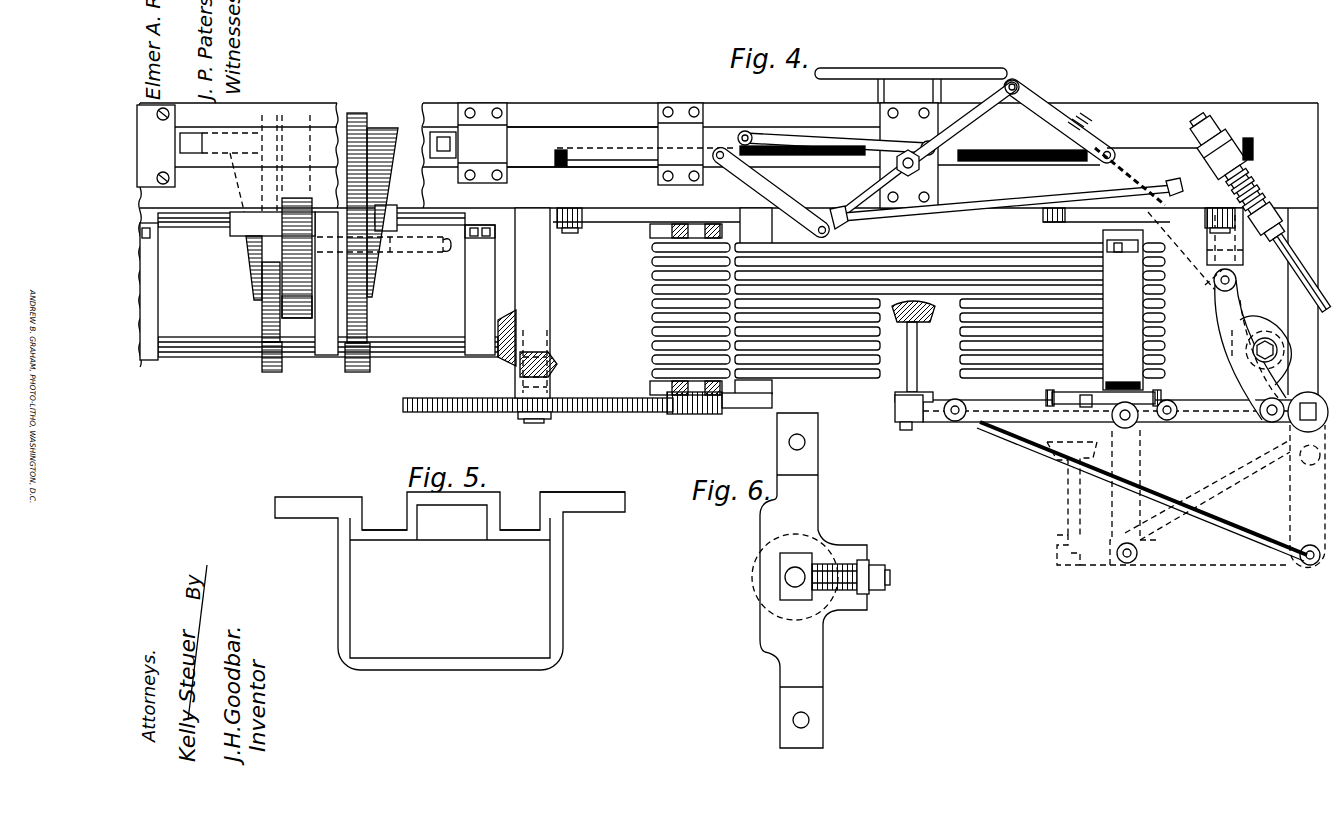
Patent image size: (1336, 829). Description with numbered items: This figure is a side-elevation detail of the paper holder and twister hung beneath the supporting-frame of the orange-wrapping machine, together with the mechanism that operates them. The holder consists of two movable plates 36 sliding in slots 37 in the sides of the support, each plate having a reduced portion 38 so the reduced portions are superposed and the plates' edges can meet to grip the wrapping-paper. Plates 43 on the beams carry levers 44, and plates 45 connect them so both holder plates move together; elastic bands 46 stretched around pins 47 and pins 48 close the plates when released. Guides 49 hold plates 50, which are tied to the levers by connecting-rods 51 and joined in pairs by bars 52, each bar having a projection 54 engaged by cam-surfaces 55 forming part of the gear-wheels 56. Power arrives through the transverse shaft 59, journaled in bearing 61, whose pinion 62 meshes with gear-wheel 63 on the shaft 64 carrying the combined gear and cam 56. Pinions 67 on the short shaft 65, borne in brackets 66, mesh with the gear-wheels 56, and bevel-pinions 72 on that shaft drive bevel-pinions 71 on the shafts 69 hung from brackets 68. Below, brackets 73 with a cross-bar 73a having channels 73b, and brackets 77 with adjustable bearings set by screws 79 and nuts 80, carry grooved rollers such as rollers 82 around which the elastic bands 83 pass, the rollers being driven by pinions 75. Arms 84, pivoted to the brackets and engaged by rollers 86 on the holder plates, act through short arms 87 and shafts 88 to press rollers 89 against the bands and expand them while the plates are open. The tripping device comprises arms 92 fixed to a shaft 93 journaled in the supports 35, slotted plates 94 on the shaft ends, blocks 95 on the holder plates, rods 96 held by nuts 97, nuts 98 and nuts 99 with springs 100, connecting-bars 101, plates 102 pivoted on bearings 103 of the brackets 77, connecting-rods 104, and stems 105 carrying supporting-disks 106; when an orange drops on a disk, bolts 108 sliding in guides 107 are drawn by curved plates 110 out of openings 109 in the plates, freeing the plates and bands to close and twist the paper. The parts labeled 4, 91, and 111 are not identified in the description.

In FIG. 4, the frame 4 is at (776, 106).
In FIG. 4, the supports 35 is at (1290, 312).
In FIG. 4, the movable plates 36 is at (1126, 150).
In FIG. 4, the slots 37 is at (990, 163).
In FIG. 4, the reduced portion 38 is at (1018, 140).
In FIG. 4, the plates 43 is at (918, 87).
In FIG. 4, the levers 44 is at (985, 100).
In FIG. 4, the plates 45 is at (1044, 106).
In FIG. 4, the elastic bands 46 is at (1046, 195).
In FIG. 4, the pins 47 is at (1180, 183).
In FIG. 4, the pins 48 is at (837, 208).
In FIG. 4, the guides 49 is at (692, 100).
In FIG. 4, the plates 50 is at (205, 155).
In FIG. 4, the connecting-rods 51 is at (843, 144).
In FIG. 4, the bars 52 is at (212, 127).
In FIG. 4, the projection 54 is at (432, 137).
In FIG. 4, the cam-surfaces 55 is at (388, 192).
In FIG. 4, the gear-wheels 56 is at (363, 129).
In FIG. 4, the transverse shaft 59 is at (594, 137).
In FIG. 4, the bearing 61 is at (250, 212).
In FIG. 4, the pinion 62 is at (296, 198).
In FIG. 4, the gear-wheel 63 is at (300, 318).
In FIG. 4, the shaft 64 is at (384, 243).
In FIG. 4, the short transverse shaft 65 is at (430, 336).
In FIG. 4, the brackets 66 is at (158, 320).
In FIG. 4, the pinions 67 is at (271, 372).
In FIG. 4, the brackets 68 is at (551, 332).
In FIG. 4, the short shafts 69 is at (533, 422).
In FIG. 4, the bevel-pinions 71 is at (557, 365).
In FIG. 4, the bevel-pinions 72 is at (510, 326).
In FIG. 4, the brackets 73 is at (650, 387).
In FIG. 5, the brackets 73 is at (565, 575).
In FIG. 4, the cross-bar 73a is at (652, 233).
In FIG. 5, the cross-bar 73a is at (560, 492).
In FIG. 5, the channels 73b is at (380, 517).
In FIG. 4, the pinions 75 is at (700, 415).
In FIG. 4, the brackets 77 is at (1165, 389).
In FIG. 6, the brackets 77 is at (818, 498).
In FIG. 4, the screws 79 is at (488, 400).
In FIG. 6, the screws 79 is at (832, 562).
In FIG. 6, the nuts 80 is at (880, 565).
In FIG. 4, the grooved rollers 82 is at (1164, 350).
In FIG. 4, the bands or belts 83 is at (967, 250).
In FIG. 4, the arms 84 is at (620, 213).
In FIG. 4, the rollers 86 is at (1220, 208).
In FIG. 4, the short arms 87 is at (762, 410).
In FIG. 4, the shafts 88 is at (773, 233).
In FIG. 4, the rollers 89 is at (748, 382).
In FIG. 4, the block 91 is at (960, 423).
In FIG. 4, the arms 92 is at (1240, 424).
In FIG. 4, the transverse shaft 93 is at (1292, 426).
In FIG. 4, the slotted plates 94 is at (1280, 338).
In FIG. 4, the blocks 95 is at (1233, 146).
In FIG. 4, the rods 96 is at (1283, 250).
In FIG. 4, the nuts 97 is at (1280, 352).
In FIG. 4, the nuts 98 is at (1206, 124).
In FIG. 4, the nuts 99 is at (1280, 196).
In FIG. 4, the springs 100 is at (1252, 186).
In FIG. 4, the connecting-bars 101 is at (953, 400).
In FIG. 4, the plates 102 is at (1026, 440).
In FIG. 4, the bearings 103 is at (1140, 425).
In FIG. 4, the connecting-rods 104 is at (1178, 500).
In FIG. 4, the stems 105 is at (906, 345).
In FIG. 4, the supporting-disks 106 is at (922, 322).
In FIG. 4, the guides 107 is at (1180, 249).
In FIG. 4, the bolts 108 is at (1222, 273).
In FIG. 4, the openings 109 is at (1256, 148).
In FIG. 4, the curved plates 110 is at (1218, 336).
In FIG. 4, the handle bar 111 is at (936, 68).